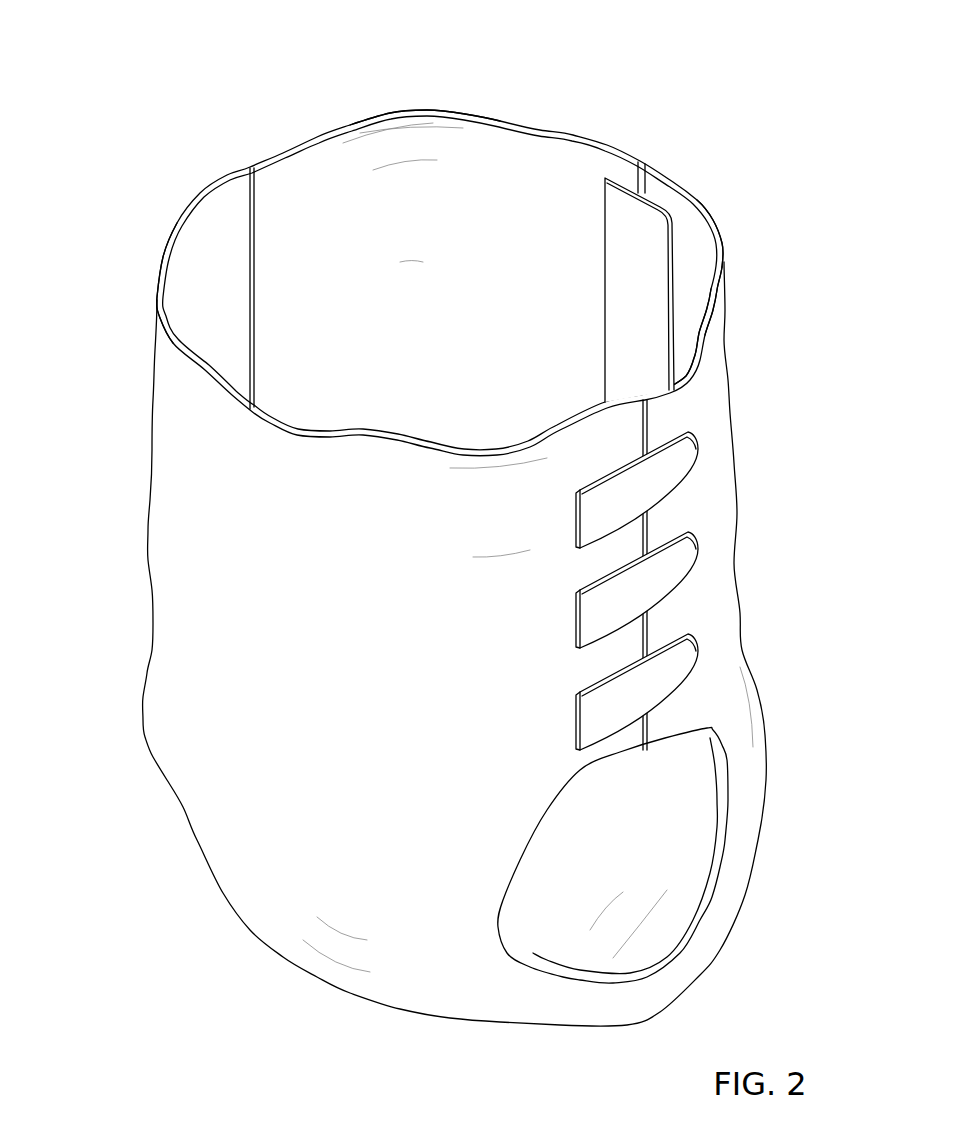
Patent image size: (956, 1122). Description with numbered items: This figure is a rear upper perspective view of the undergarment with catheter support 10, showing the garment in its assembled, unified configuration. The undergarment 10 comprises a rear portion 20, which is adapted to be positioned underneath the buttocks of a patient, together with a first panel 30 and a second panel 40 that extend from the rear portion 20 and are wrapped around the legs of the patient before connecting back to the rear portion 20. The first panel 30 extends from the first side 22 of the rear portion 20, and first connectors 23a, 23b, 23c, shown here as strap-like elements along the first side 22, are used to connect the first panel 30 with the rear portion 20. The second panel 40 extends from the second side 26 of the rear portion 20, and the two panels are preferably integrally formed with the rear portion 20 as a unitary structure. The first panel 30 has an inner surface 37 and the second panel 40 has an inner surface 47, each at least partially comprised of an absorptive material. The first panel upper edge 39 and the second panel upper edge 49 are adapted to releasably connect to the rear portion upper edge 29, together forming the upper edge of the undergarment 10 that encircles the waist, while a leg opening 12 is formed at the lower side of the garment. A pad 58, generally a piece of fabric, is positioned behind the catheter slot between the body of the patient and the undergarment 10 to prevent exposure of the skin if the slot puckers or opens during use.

The undergarment with catheter support 10 is at (441, 517).
The first leg opening 12 is at (630, 833).
The rear portion 20 is at (260, 500).
The first side of the rear portion 22 is at (647, 527).
The first connector 23a is at (650, 470).
The first connector 23b is at (682, 560).
The first connector 23c is at (680, 663).
The second side of the rear portion 26 is at (255, 202).
The rear portion upper edge 29 is at (157, 297).
The first panel 30 is at (723, 250).
The inner surface of the first panel 37 is at (685, 293).
The first panel upper edge 39 is at (722, 232).
The second panel 40 is at (493, 116).
The inner surface of the second panel 47 is at (547, 228).
The second panel upper edge 49 is at (425, 108).
The pad 58 is at (630, 240).